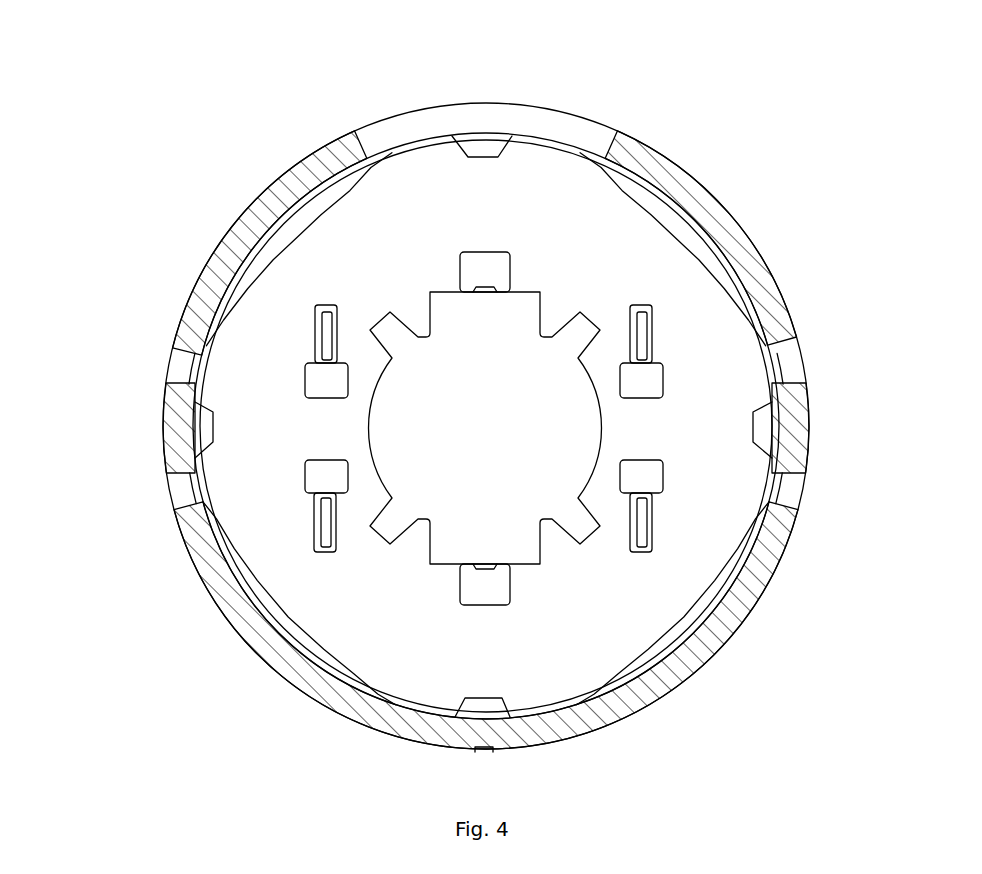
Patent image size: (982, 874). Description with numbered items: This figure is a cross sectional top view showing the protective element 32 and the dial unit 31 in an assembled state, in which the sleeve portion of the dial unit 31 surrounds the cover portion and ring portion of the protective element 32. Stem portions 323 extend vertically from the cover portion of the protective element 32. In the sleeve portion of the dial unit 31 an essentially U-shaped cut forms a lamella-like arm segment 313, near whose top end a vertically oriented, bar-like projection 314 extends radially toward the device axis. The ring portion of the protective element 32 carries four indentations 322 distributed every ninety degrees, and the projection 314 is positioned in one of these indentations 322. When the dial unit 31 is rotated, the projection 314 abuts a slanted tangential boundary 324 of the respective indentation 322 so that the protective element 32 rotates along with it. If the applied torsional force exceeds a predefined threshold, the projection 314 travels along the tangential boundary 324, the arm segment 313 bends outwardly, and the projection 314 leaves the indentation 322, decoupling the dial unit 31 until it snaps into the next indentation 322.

The dial unit 31 is at (160, 305).
The arm segment 313 is at (398, 128).
The projection 314 is at (484, 140).
The protective element 32 is at (697, 607).
The indentation 322 is at (762, 430).
The stem portion 323 is at (475, 594).
The tangential boundary 324 is at (204, 402).